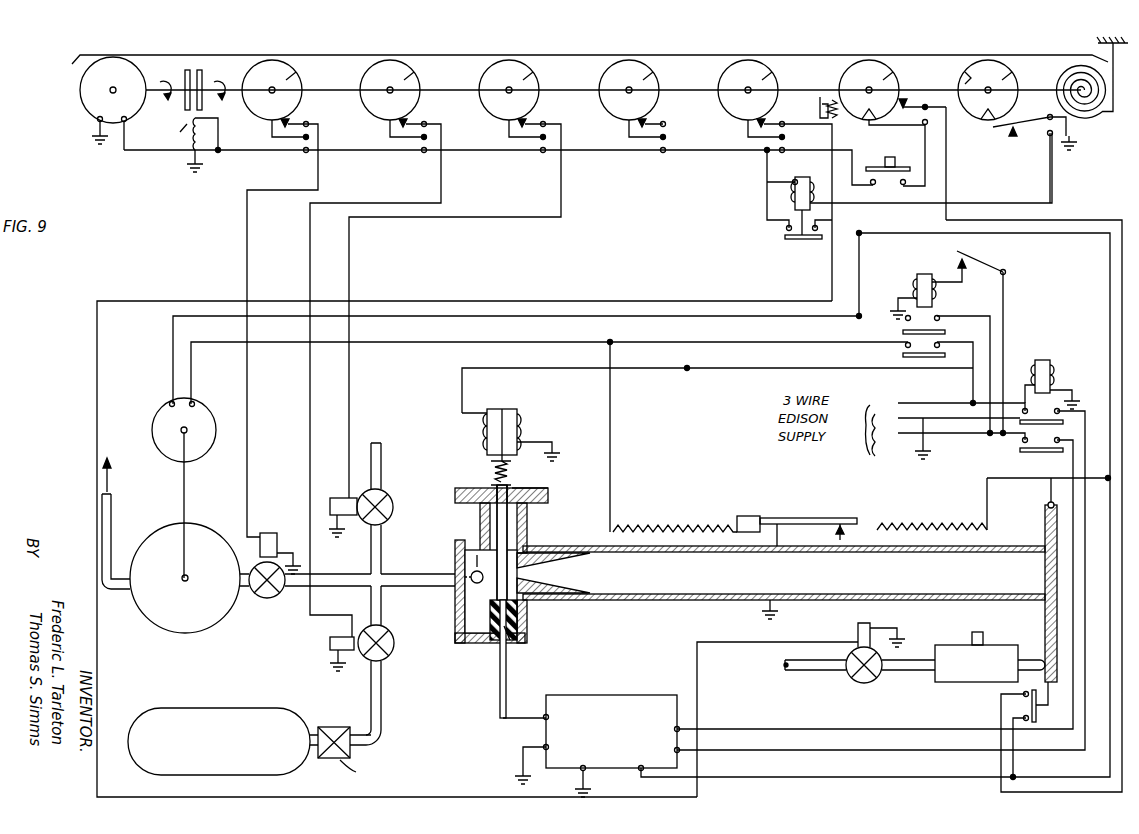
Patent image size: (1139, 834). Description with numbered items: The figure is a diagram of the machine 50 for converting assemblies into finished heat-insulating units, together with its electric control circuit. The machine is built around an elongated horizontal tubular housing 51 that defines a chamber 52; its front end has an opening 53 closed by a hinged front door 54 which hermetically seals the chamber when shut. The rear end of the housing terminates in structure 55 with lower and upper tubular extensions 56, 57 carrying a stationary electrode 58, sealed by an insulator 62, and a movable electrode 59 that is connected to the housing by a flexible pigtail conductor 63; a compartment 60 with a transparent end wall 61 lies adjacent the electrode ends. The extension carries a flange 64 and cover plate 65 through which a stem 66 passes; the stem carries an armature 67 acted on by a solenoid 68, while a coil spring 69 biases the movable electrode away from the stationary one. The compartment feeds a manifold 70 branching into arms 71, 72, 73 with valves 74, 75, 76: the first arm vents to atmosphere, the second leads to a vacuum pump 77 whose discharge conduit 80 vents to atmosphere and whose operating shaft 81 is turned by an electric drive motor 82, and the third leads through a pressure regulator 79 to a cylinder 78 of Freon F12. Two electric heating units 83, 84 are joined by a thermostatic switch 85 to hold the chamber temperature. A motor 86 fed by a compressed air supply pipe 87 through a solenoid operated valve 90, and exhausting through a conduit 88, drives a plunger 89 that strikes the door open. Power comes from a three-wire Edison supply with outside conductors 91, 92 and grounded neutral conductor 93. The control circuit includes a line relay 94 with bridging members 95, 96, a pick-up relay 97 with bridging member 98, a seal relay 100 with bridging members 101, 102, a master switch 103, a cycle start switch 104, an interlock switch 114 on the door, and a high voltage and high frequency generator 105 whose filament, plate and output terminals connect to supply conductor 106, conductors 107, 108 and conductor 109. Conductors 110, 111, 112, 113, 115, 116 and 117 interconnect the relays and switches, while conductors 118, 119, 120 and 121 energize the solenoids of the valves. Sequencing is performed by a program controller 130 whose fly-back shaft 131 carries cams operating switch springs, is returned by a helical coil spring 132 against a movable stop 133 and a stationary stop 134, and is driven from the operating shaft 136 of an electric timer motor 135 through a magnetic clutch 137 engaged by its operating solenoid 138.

The program controller 130 is at (590, 118).
The electric timer motor 135 is at (62, 86).
The operating shaft 136 is at (160, 82).
The magnetic clutch 137 is at (206, 56).
The fly-back shaft 131 is at (219, 83).
The operating solenoid 138 is at (186, 148).
The conductor 112 is at (155, 132).
The grounded neutral conductor 93 is at (54, 128).
The conductor 119 is at (318, 177).
The conductor 120 is at (441, 188).
The conductor 118 is at (561, 196).
The movable stop 133 is at (823, 92).
The stationary stop 134 is at (820, 101).
The cycle start switch 104 is at (890, 165).
The conductor 113 is at (946, 158).
The conductor 116 is at (1040, 202).
The helical coil spring 132 is at (1086, 120).
The conductor 115 is at (1096, 224).
The pick-up relay 97 is at (782, 200).
The contact bridging member 98 is at (789, 240).
The conductor 121 is at (832, 277).
The supply conductor 106 is at (925, 232).
The line relay 94 is at (908, 280).
The conductor 111 is at (962, 284).
The master switch 103 is at (1002, 337).
The outside conductor 92 is at (954, 316).
The outside conductor 91 is at (958, 340).
The contact bridging member 95 is at (902, 332).
The contact bridging member 96 is at (902, 357).
The conductor 110 is at (834, 340).
The conductor 117 is at (520, 370).
The seal relay 100 is at (1070, 350).
The conductor 108 is at (1080, 395).
The contact bridging member 101 is at (1015, 420).
The contact bridging member 102 is at (1022, 448).
The conductor 107 is at (1063, 498).
The interlock switch 114 is at (1070, 725).
The electric drive motor 82 is at (212, 394).
The operating shaft 81 is at (188, 472).
The conduit 80 is at (118, 524).
The vacuum pump 77 is at (212, 536).
The solenoid controlled valve 75 is at (260, 592).
The solenoid controlled valve 74 is at (390, 500).
The arm 72 is at (348, 576).
The arm 71 is at (382, 550).
The arm 73 is at (374, 606).
The manifold 70 is at (418, 608).
The structure 55 is at (473, 538).
The upper tubular extension 57 is at (527, 531).
The compartment 60 is at (480, 592).
The transparent end wall 61 is at (470, 554).
The flexible pigtail conductor 63 is at (470, 565).
The lower tubular extension 56 is at (528, 622).
The movable electrode 59 is at (521, 577).
The stationary electrode 58 is at (500, 666).
The insulator 62 is at (514, 644).
The solenoid 68 is at (519, 414).
The armature 67 is at (507, 408).
The coil spring 69 is at (492, 478).
The stem 66 is at (512, 488).
The flange 64 is at (548, 500).
The cover plate 65 is at (549, 488).
The chamber 52 is at (815, 577).
The electric heating unit 83 is at (660, 530).
The thermostatic switch 85 is at (830, 516).
The machine 50 is at (799, 539).
The electric heating unit 84 is at (928, 533).
The tubular housing 51 is at (1024, 544).
The opening 53 is at (1044, 574).
The front door 54 is at (1060, 552).
The motor 86 is at (976, 663).
The conduit 88 is at (970, 634).
The plunger 89 is at (1030, 658).
The compressed air supply pipe 87 is at (816, 660).
The solenoid operated valve 90 is at (859, 682).
The high voltage and high frequency generator 105 is at (630, 696).
The conductor 109 is at (530, 707).
The cylinder 78 is at (134, 718).
The pressure regulator 79 is at (360, 728).
The solenoid controlled valve 76 is at (391, 655).